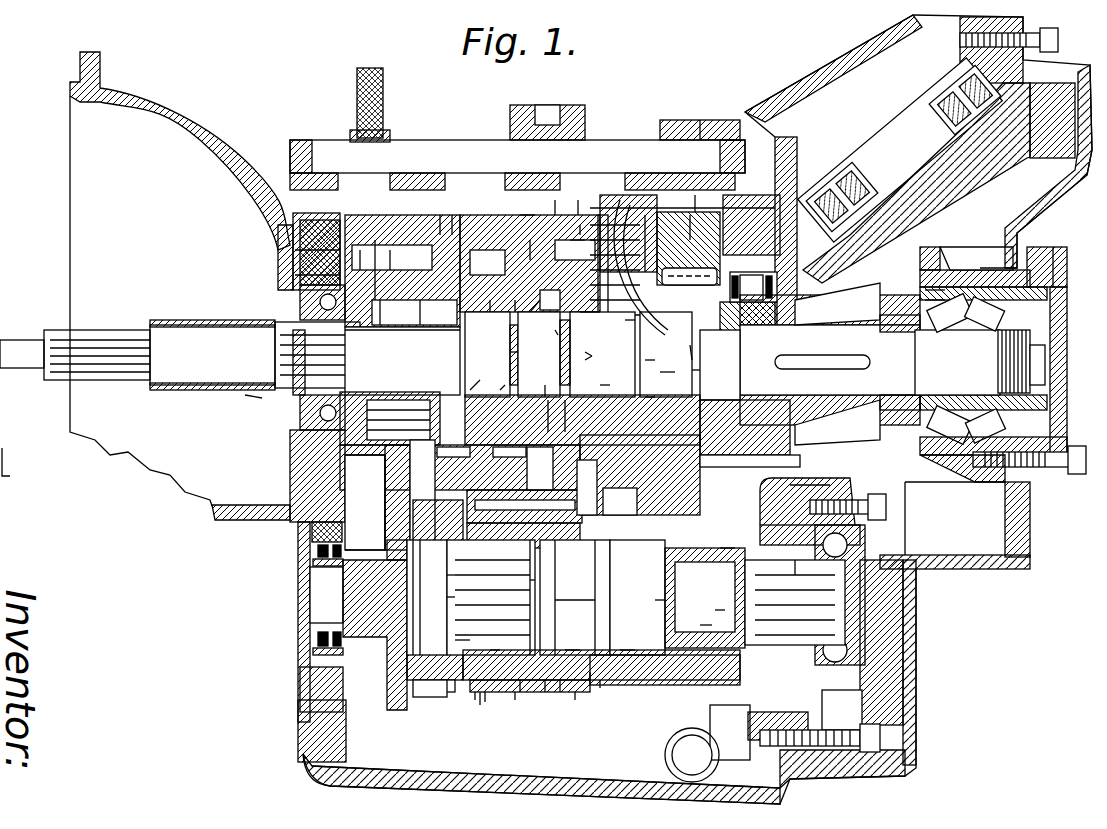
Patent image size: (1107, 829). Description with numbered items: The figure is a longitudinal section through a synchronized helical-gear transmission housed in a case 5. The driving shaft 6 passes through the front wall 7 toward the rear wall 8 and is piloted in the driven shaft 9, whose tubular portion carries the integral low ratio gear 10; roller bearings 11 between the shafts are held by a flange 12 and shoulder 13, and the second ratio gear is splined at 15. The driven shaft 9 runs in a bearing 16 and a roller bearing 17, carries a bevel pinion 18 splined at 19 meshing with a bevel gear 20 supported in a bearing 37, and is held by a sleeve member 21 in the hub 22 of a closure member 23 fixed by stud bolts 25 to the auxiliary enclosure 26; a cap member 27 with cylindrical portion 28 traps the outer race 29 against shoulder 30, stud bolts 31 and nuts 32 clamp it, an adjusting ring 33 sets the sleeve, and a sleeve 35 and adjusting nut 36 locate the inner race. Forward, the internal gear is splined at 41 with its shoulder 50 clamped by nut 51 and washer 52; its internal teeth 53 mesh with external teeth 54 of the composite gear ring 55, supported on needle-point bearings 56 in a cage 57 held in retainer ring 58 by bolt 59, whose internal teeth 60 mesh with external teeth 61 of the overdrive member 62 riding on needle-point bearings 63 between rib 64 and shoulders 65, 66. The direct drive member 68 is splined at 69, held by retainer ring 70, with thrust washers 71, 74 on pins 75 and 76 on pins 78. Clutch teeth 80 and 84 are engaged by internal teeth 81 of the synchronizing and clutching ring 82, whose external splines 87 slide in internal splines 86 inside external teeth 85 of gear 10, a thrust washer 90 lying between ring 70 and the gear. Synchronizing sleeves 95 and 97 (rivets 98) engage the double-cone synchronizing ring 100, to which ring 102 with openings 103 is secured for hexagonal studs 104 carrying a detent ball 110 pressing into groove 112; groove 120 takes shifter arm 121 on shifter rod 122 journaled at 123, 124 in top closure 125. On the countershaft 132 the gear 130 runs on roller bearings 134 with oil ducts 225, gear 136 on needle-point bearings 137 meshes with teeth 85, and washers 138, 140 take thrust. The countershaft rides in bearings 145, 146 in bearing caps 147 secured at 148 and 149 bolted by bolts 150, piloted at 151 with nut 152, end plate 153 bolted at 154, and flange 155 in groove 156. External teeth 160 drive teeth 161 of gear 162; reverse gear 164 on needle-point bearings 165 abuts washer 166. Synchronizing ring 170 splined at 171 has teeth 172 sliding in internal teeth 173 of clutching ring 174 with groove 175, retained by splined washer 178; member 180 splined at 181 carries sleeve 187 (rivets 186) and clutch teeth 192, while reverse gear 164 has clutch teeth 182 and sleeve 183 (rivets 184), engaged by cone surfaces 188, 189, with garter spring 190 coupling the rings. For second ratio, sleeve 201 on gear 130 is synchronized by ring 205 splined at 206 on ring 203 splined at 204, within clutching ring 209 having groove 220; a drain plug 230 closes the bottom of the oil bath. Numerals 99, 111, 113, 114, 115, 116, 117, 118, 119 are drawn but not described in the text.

The case 5 is at (592, 356).
The driving shaft 6 is at (182, 340).
The front wall 7 is at (282, 232).
The rear wall 8 is at (775, 240).
The driven shaft 9 is at (745, 370).
The low ratio gear 10 is at (647, 215).
The roller bearings 11 is at (680, 353).
The flange 12 is at (697, 380).
The annular shoulder 13 is at (650, 410).
The splines 15 is at (689, 277).
The bearing 16 is at (753, 287).
The roller bearing 17 is at (950, 333).
The bevel driving pinion 18 is at (812, 318).
The splines 19 is at (838, 356).
The bevel gear 20 is at (935, 206).
The sleeve member 21 is at (925, 268).
The hub 22 is at (970, 258).
The closure member 23 is at (1060, 192).
The stud bolts 25 is at (1058, 40).
The auxiliary enclosure 26 is at (948, 568).
The cap member 27 is at (1062, 265).
The cylindrical portion 28 is at (1067, 292).
The outer race 29 is at (930, 292).
The internal shoulder 30 is at (935, 300).
The stud bolts 31 is at (1076, 448).
The nuts 32 is at (1075, 476).
The adjusting ring 33 is at (1035, 515).
The sleeve 35 is at (905, 332).
The adjusting nut 36 is at (1028, 340).
The bearing 37 is at (850, 190).
The splines 41 is at (278, 345).
The shoulder 50 is at (388, 312).
The nut 51 is at (318, 304).
The washer 52 is at (318, 415).
The internal helical teeth 53 is at (388, 265).
The external helical teeth 54 is at (380, 240).
The composite gear ring 55 is at (410, 312).
The needle-point bearings 56 is at (452, 215).
The cage 57 is at (470, 207).
The retainer ring 58 is at (440, 215).
The bolt 59 is at (480, 195).
The internal helical teeth 60 is at (490, 300).
The external helical teeth 61 is at (478, 380).
The overdrive member 62 is at (487, 354).
The needle-point bearings 63 is at (497, 382).
The external annular rib 64 is at (506, 352).
The shoulder 65 is at (466, 352).
The shoulder 66 is at (560, 355).
The direct drive driven member 68 is at (597, 354).
The splines 69 is at (652, 353).
The retainer ring 70 is at (605, 376).
The thrust washer 71 is at (540, 379).
The thrust washer 74 is at (535, 240).
The pins 75 is at (527, 215).
The thrust washer 76 is at (370, 398).
The pins 78 is at (360, 265).
The external clutch teeth 80 is at (695, 230).
The internal clutch teeth 81 is at (575, 240).
The synchronizing and clutching ring 82 is at (580, 220).
The external clutch teeth 84 is at (515, 300).
The external teeth 85 is at (630, 195).
The internal splines 86 is at (665, 220).
The external splines 87 is at (610, 210).
The thrust washer 90 is at (665, 368).
The synchronizing sleeve 95 is at (530, 316).
The synchronizing sleeve 97 is at (590, 321).
The rivets 98 is at (630, 322).
The synchronizer cone 99 is at (547, 339).
The synchronizing ring 100 is at (278, 386).
The ring 102 is at (670, 300).
The openings 103 is at (553, 468).
The studs 104 is at (612, 488).
The steel ball 110 is at (360, 240).
The bearing retainer 111 is at (295, 255).
The groove 112 is at (298, 292).
The bearing retainer 113 is at (300, 275).
The shift rail 114 is at (700, 220).
The housing wall 115 is at (300, 215).
The bell housing 116 is at (212, 128).
The bearing retainer 117 is at (295, 420).
The sleeve 118 is at (165, 392).
The seal 119 is at (245, 396).
The external groove 120 is at (580, 210).
The shifter arm 121 is at (560, 205).
The shifter rod 122 is at (468, 150).
The journal 123 is at (415, 155).
The journal 124 is at (680, 138).
The top closure 125 is at (712, 135).
The gear 130 is at (680, 690).
The countershaft 132 is at (655, 600).
The roller bearings 134 is at (705, 598).
The gear 136 is at (575, 592).
The needle-point bearings 137 is at (625, 650).
The washer 138 is at (637, 597).
The thrust washer 140 is at (535, 580).
The bearing 145 is at (315, 553).
The bearing 146 is at (862, 540).
The bearing cap 147 is at (305, 478).
The securing point 148 is at (312, 526).
The bearing cap 149 is at (840, 495).
The bolts 150 is at (835, 748).
The pilot 151 is at (322, 600).
The nut 152 is at (855, 552).
The end plate 153 is at (870, 500).
The bolting point 154 is at (886, 510).
The flange 155 is at (780, 730).
The groove 156 is at (770, 728).
The external helical teeth 160 is at (372, 505).
The external helical teeth 161 is at (375, 600).
The gear 162 is at (405, 725).
The reverse gear 164 is at (427, 523).
The needle-point bearings 165 is at (460, 640).
The washer 166 is at (410, 662).
The synchronizing ring 170 is at (490, 598).
The splines 171 is at (470, 597).
The external teeth 172 is at (550, 705).
The internal teeth 173 is at (515, 700).
The positive clutching ring 174 is at (545, 692).
The groove 175 is at (480, 705).
The splined washer 178 is at (452, 565).
The synchronizing and clutching member 180 is at (575, 597).
The splines 181 is at (570, 650).
The clutch teeth 182 is at (455, 690).
The synchronizing sleeve 183 is at (475, 692).
The rivets 184 is at (495, 650).
The rivets 186 is at (590, 680).
The synchronizing sleeve 187 is at (575, 700).
The conical surface 188 is at (485, 702).
The conical surface 189 is at (560, 692).
The garter spring 190 is at (520, 692).
The clutch teeth 192 is at (600, 688).
The synchronizing sleeve 201 is at (705, 625).
The ring 203 is at (790, 620).
The splines 204 is at (720, 610).
The synchronizing ring 205 is at (795, 585).
The splines 206 is at (725, 560).
The positive clutching ring 209 is at (840, 478).
The groove 220 is at (722, 725).
The oil feeding ducts 225 is at (790, 465).
The drain plug 230 is at (672, 752).